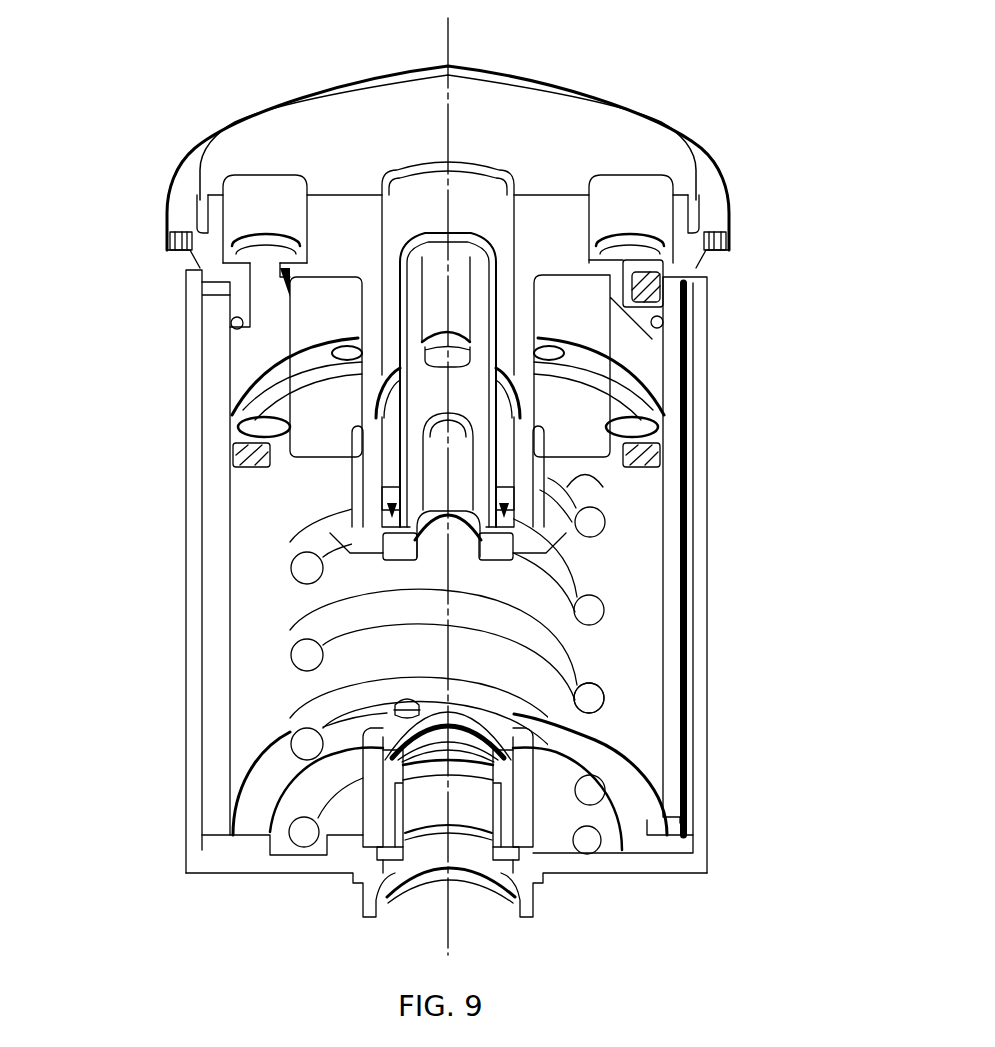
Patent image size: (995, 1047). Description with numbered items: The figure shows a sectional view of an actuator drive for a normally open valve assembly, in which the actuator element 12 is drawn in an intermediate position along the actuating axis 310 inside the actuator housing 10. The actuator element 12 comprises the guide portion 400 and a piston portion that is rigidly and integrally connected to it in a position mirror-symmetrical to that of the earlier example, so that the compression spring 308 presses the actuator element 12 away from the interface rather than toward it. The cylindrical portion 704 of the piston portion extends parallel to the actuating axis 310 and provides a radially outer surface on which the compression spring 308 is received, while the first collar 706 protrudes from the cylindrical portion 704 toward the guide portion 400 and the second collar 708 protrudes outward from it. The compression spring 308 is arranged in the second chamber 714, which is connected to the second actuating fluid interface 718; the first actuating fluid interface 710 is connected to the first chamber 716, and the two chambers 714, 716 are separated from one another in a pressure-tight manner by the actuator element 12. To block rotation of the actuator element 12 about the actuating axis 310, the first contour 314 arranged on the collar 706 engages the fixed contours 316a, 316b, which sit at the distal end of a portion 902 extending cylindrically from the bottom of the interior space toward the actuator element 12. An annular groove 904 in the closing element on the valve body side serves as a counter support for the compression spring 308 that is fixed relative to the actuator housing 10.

The actuator housing 10 is at (705, 337).
The actuator element 12 is at (300, 430).
The compression spring 308 is at (390, 516).
The actuating axis 310 is at (452, 38).
The first contour 314 is at (365, 563).
The fixed contour 316a is at (407, 700).
The fixed contour 316b is at (540, 740).
The guide portion 400 is at (477, 400).
The cylindrical portion 704 is at (343, 510).
The first collar 706 is at (527, 543).
The second collar 708 is at (607, 463).
The first actuating fluid interface 710 is at (638, 200).
The second chamber 714 is at (307, 300).
The first chamber 716 is at (243, 730).
The second actuating fluid interface 718 is at (250, 213).
The cylindrical portion 902 is at (523, 813).
The annular groove 904 is at (615, 847).